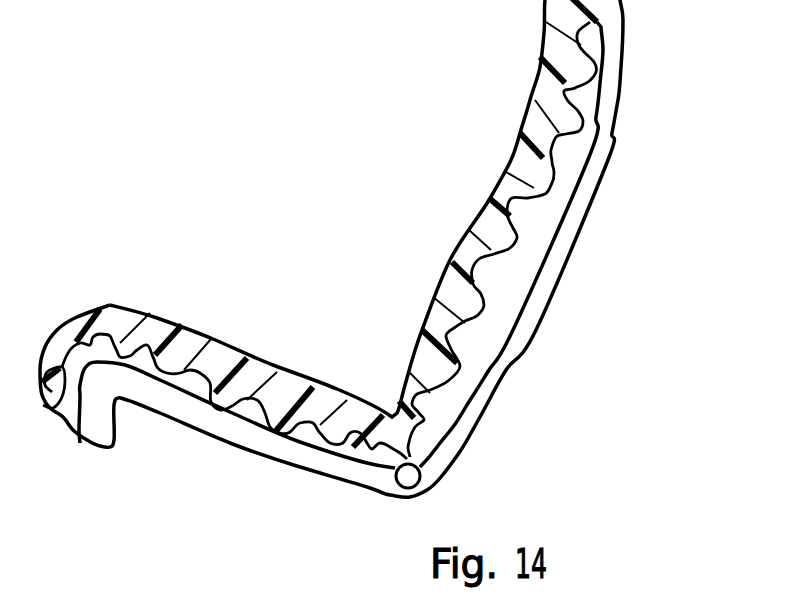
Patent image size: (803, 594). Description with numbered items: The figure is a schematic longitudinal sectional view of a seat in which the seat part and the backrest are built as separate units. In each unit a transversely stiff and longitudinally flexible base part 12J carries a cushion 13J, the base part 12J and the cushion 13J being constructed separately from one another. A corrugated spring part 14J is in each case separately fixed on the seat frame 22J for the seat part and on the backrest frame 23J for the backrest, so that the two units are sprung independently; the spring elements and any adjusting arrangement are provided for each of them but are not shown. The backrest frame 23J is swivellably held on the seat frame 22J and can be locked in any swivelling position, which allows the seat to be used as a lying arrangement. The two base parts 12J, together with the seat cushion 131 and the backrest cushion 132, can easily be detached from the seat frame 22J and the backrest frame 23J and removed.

The base part 12J is at (536, 237).
The cushion 13J is at (319, 223).
The corrugated spring part 14J is at (563, 168).
The seat frame 22J is at (308, 458).
The backrest frame 23J is at (523, 317).
The seat cushion 131 is at (211, 338).
The backrest cushion 132 is at (493, 183).